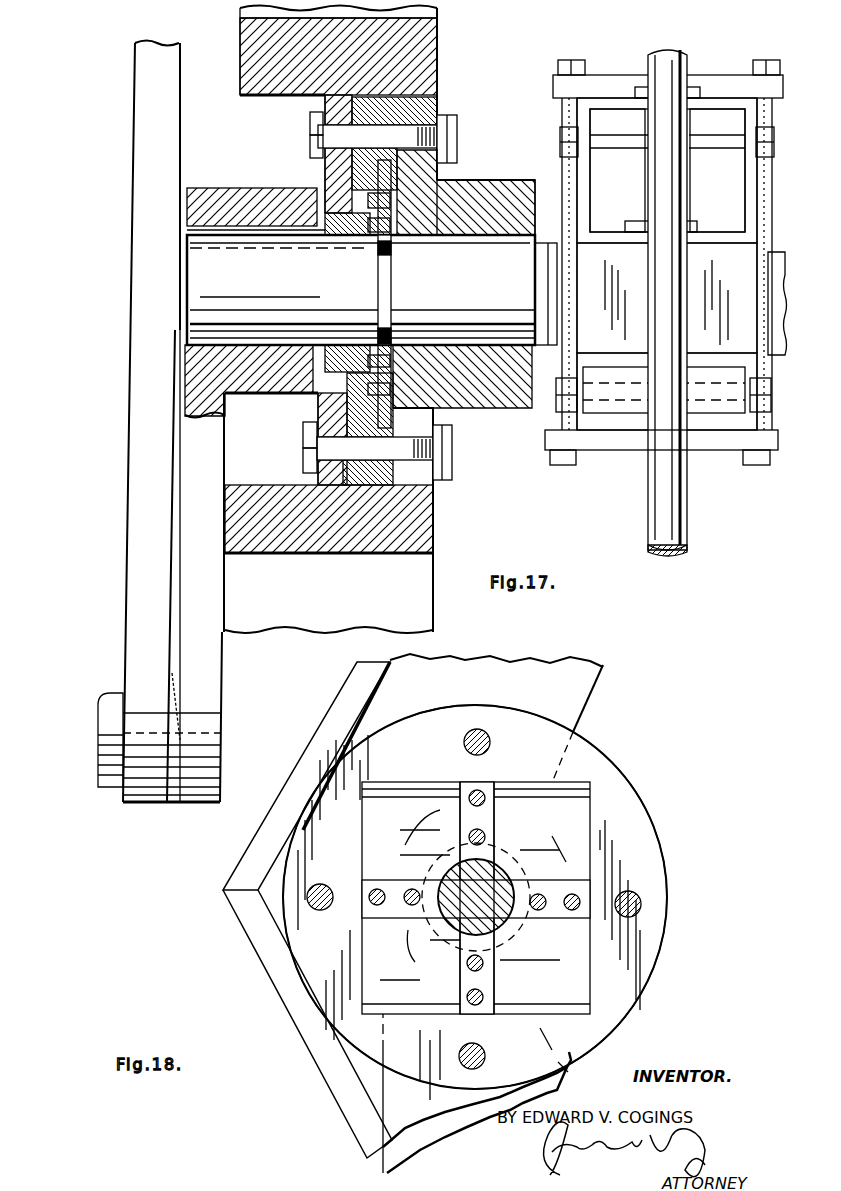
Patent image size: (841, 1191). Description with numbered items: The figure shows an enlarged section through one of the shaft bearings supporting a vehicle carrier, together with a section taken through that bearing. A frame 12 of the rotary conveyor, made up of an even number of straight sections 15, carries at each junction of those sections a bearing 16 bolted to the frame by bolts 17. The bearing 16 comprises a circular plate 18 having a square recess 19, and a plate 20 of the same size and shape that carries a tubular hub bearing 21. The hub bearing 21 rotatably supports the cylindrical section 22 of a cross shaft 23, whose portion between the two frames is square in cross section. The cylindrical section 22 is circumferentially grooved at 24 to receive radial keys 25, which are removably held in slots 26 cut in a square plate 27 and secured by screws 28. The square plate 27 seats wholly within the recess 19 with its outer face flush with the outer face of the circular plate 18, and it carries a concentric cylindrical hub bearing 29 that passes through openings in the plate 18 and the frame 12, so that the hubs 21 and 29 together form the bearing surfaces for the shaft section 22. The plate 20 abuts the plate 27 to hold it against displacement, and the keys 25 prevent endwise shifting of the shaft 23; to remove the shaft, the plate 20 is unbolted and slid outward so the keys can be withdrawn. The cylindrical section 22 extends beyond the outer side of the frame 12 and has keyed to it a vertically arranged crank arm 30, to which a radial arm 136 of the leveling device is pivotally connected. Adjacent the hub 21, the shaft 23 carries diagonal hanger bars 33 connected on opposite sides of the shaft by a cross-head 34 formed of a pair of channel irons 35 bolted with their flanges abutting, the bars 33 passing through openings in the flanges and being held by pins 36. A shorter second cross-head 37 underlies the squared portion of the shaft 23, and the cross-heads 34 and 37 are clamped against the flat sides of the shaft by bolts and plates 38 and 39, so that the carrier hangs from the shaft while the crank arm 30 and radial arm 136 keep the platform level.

In FIG. 17, the frame 12 is at (440, 607).
In FIG. 18, the frame 12 is at (310, 727).
In FIG. 17, the straight section 15 is at (440, 20).
In FIG. 18, the straight section 15 is at (585, 690).
In FIG. 17, the bearing 16 is at (468, 174).
In FIG. 18, the bearing 16 is at (643, 788).
In FIG. 17, the bolt 17 is at (447, 136).
In FIG. 18, the bolt 17 is at (491, 742).
In FIG. 17, the circular plate 18 is at (400, 95).
In FIG. 18, the circular plate 18 is at (660, 852).
In FIG. 17, the square recess 19 is at (433, 410).
In FIG. 18, the square recess 19 is at (515, 792).
In FIG. 17, the plate 20 is at (430, 103).
In FIG. 17, the tubular hub bearing 21 is at (503, 208).
In FIG. 17, the cylindrical section 22 is at (361, 290).
In FIG. 18, the cylindrical section 22 is at (498, 886).
In FIG. 17, the cross shaft 23 is at (548, 360).
In FIG. 17, the circumferential groove 24 is at (391, 282).
In FIG. 17, the radial key 25 is at (392, 250).
In FIG. 18, the radial key 25 is at (480, 820).
In FIG. 18, the slot 26 is at (460, 822).
In FIG. 17, the square plate 27 is at (368, 240).
In FIG. 18, the square plate 27 is at (564, 840).
In FIG. 17, the screw 28 is at (383, 345).
In FIG. 18, the screw 28 is at (412, 890).
In FIG. 17, the cylindrical hub bearing 29 is at (292, 425).
In FIG. 17, the crank arm 30 is at (212, 668).
In FIG. 18, the crank arm 30 is at (415, 1152).
In FIG. 17, the diagonal hanger bar 33 is at (672, 510).
In FIG. 17, the cross-head 34 is at (722, 92).
In FIG. 17, the channel iron 35 is at (590, 193).
In FIG. 17, the pin 36 is at (640, 88).
In FIG. 17, the second cross-head 37 is at (622, 447).
In FIG. 17, the bolt 38 is at (566, 117).
In FIG. 17, the plate 39 is at (558, 88).
In FIG. 17, the radial arm 136 is at (126, 577).